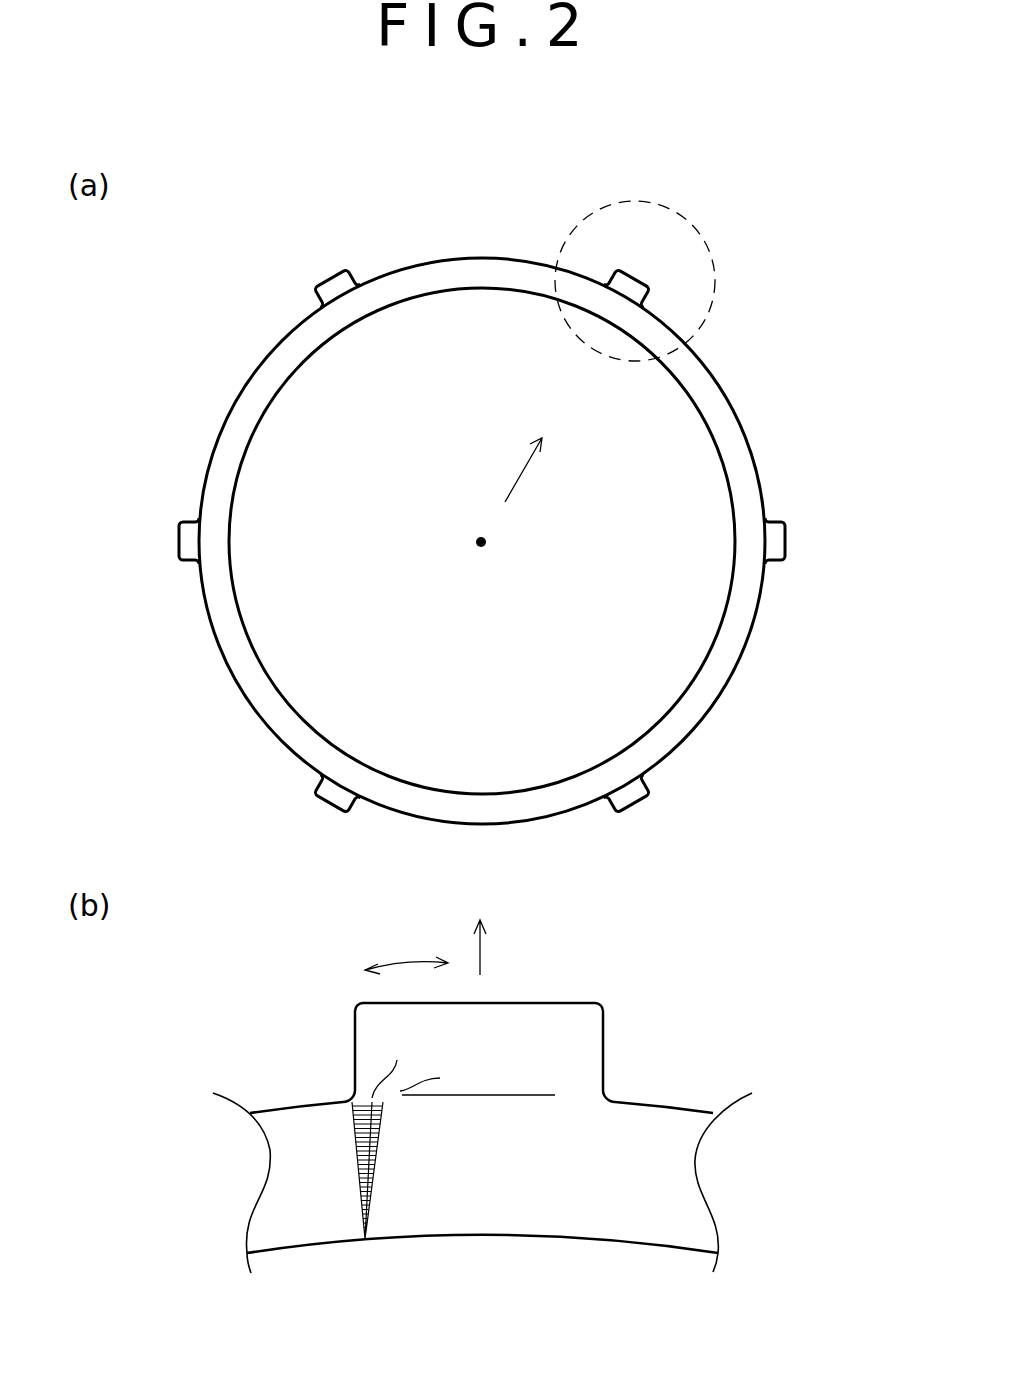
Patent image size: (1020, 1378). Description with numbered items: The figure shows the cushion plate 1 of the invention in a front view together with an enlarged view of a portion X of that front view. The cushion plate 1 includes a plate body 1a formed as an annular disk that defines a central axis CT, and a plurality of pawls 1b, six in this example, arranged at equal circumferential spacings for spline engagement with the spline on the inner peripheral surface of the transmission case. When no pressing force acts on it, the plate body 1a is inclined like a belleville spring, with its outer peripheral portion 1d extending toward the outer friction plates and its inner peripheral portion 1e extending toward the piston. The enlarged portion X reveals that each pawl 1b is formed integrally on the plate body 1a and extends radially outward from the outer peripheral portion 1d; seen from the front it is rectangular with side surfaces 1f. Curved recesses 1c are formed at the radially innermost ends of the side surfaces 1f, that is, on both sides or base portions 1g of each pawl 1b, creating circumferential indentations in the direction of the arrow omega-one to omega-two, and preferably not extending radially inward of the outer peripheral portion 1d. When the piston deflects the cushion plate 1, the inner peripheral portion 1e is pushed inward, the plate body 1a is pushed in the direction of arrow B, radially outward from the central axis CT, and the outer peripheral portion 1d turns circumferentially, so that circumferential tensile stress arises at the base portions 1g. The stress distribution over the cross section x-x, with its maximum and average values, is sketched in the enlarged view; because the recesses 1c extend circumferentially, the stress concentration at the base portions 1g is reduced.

The cushion plate 1 is at (478, 215).
The plate body 1a is at (712, 392).
The pawl 1b is at (634, 290).
The curved recess 1c is at (607, 286).
The outer peripheral portion 1d is at (748, 425).
The inner peripheral portion 1e is at (697, 411).
The side surface 1f is at (355, 1026).
The base portion 1g is at (609, 1086).
The portion X is at (668, 210).
The central axis CT is at (490, 540).
The arrow B is at (514, 706).